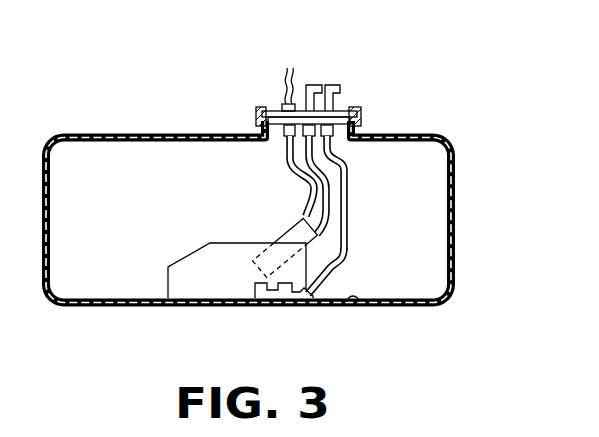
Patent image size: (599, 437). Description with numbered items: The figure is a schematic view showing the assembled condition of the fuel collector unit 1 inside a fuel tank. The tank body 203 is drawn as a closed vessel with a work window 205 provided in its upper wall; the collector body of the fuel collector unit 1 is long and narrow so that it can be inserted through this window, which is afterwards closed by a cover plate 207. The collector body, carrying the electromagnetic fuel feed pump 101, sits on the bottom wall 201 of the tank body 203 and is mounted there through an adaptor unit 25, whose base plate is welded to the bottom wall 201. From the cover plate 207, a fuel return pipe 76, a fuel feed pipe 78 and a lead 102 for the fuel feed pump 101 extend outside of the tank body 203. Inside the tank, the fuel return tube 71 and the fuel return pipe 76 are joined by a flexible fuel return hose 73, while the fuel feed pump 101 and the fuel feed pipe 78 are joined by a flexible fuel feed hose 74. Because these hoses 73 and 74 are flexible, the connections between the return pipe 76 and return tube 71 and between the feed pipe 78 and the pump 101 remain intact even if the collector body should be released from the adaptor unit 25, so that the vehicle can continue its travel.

The fuel collector unit 1 is at (197, 251).
The adaptor unit 25 is at (284, 300).
The fuel return tube 71 is at (327, 283).
The flexible fuel return hose 73 is at (348, 170).
The flexible fuel feed hose 74 is at (331, 186).
The fuel return pipe 76 is at (336, 84).
The fuel feed pipe 78 is at (312, 84).
The electromagnetic fuel feed pump 101 is at (285, 238).
The lead 102 is at (293, 177).
The bottom wall 201 is at (352, 304).
The tank body 203 is at (382, 136).
The work window 205 is at (272, 110).
The cover plate 207 is at (302, 108).